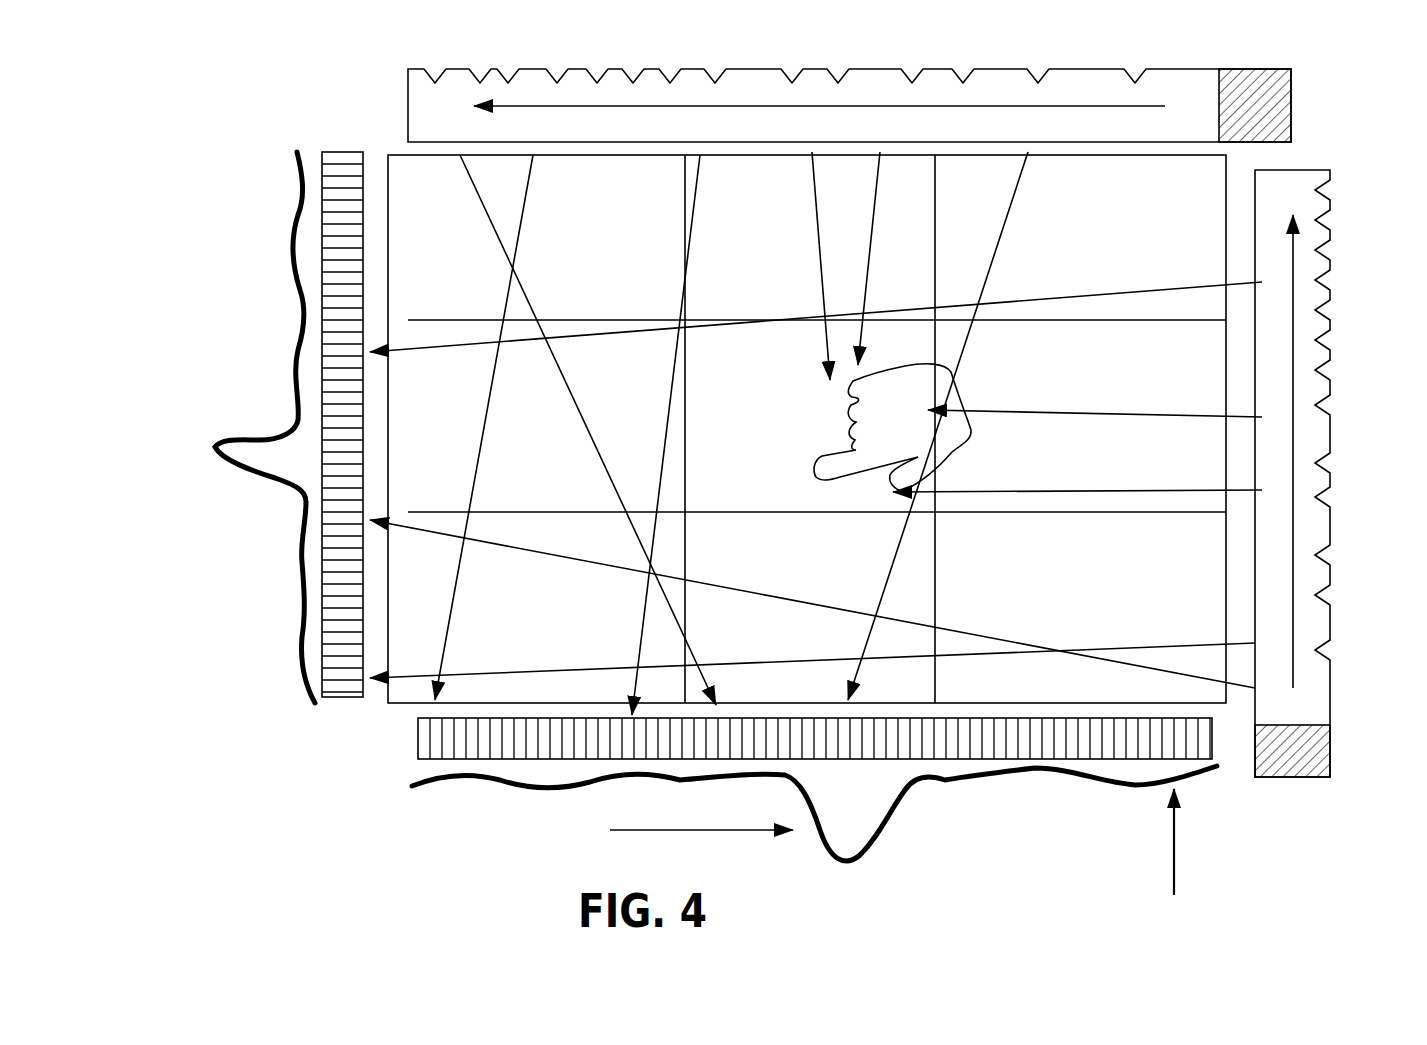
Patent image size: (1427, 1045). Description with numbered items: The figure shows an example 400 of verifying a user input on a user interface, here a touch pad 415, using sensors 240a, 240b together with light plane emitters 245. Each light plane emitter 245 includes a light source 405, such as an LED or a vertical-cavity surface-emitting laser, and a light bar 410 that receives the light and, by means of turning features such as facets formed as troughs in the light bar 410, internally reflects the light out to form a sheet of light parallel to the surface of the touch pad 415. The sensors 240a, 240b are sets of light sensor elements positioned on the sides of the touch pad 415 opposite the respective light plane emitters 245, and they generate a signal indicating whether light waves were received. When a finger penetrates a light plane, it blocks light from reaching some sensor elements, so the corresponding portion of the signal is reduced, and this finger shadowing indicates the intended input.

The example 400 is at (160, 53).
The light plane emitter 245 is at (1328, 798).
The light bar 410 is at (816, 68).
The light source 405 is at (1272, 46).
The sensor 240a is at (350, 698).
The sensor 240b is at (417, 736).
The touch pad 415 is at (816, 433).